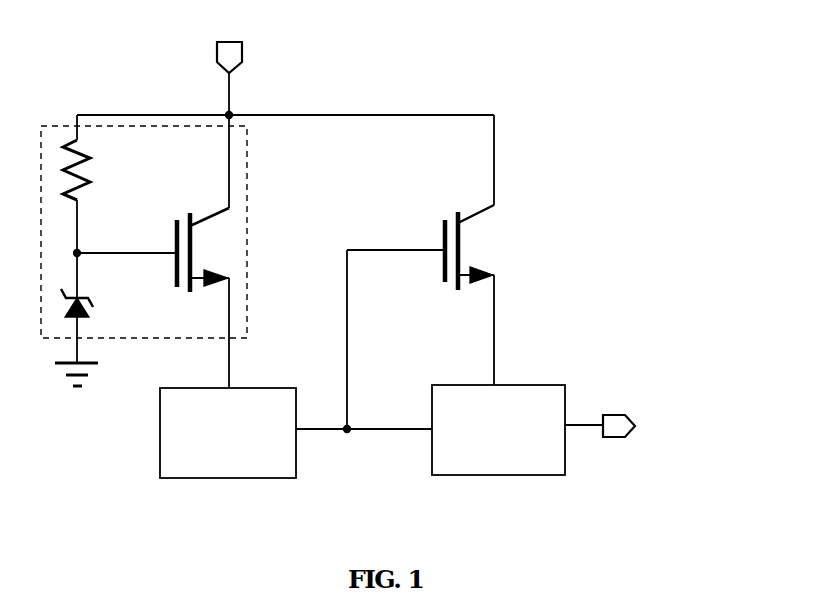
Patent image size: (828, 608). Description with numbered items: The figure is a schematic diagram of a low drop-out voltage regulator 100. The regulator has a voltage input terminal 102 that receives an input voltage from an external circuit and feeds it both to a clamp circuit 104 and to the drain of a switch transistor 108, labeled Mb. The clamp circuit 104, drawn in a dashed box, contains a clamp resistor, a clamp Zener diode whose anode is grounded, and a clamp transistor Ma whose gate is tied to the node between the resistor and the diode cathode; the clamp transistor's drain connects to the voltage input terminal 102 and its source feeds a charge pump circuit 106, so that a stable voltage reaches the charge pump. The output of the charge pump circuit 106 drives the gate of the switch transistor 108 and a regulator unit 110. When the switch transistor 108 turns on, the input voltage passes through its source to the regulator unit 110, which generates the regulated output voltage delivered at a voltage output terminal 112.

The low drop-out voltage regulator 100 is at (609, 40).
The voltage input terminal 102 is at (224, 58).
The clamp circuit 104 is at (248, 205).
The charge pump circuit 106 is at (220, 467).
The switch transistor 108 is at (488, 237).
The LDO unit 110 is at (530, 465).
The voltage output terminal 112 is at (614, 430).